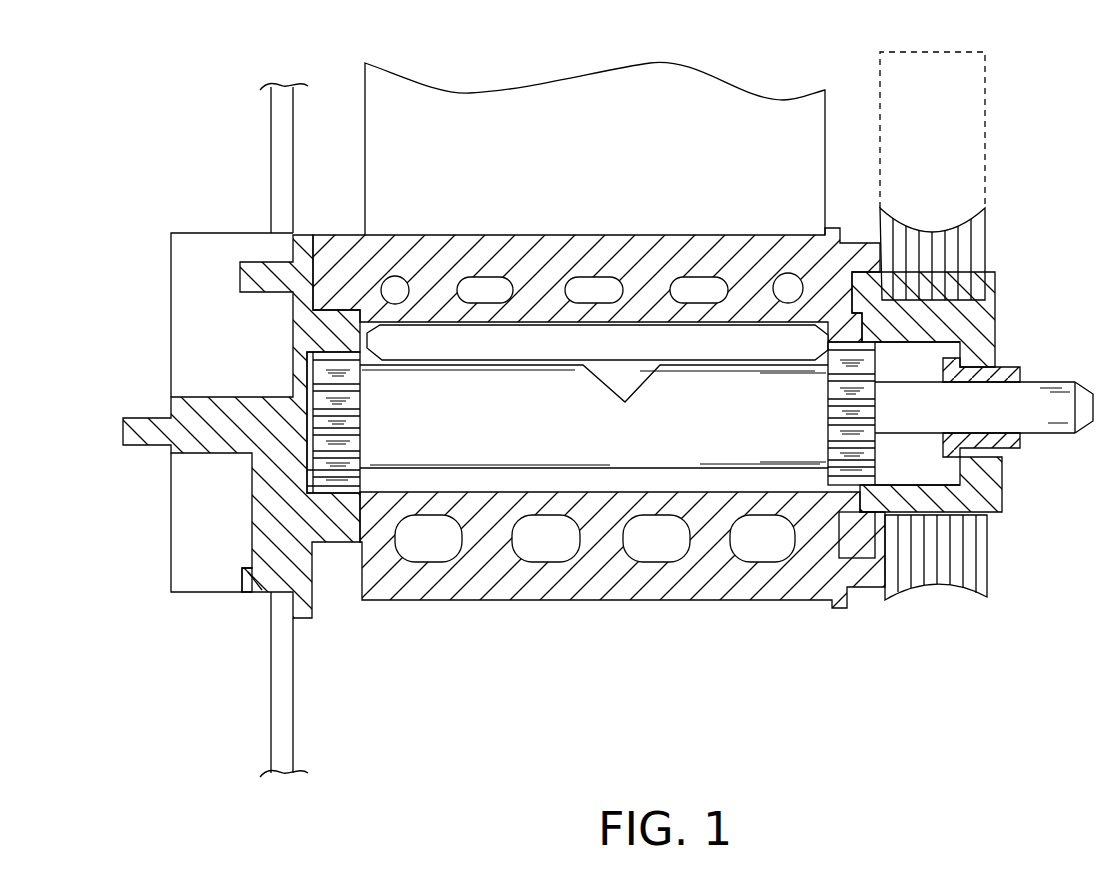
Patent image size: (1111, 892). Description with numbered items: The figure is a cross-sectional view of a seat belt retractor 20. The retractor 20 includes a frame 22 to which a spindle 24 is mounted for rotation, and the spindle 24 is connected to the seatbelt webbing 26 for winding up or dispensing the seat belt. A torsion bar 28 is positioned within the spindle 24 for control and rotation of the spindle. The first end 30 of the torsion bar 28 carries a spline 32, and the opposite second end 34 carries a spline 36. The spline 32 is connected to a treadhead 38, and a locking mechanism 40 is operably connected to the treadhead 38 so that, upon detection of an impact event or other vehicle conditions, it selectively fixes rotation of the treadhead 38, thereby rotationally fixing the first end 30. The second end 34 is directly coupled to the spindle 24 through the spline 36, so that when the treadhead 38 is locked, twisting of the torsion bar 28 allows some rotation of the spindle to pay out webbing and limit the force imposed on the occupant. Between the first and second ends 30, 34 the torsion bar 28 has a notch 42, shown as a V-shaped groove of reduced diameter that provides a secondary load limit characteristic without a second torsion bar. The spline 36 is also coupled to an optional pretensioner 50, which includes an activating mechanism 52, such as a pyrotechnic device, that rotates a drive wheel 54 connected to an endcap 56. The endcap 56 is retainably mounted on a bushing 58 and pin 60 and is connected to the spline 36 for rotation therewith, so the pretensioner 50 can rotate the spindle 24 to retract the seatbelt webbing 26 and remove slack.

The seat belt retractor 20 is at (236, 80).
The frame 22 is at (278, 175).
The spindle 24 is at (522, 257).
The seatbelt webbing 26 is at (647, 155).
The torsion bar 28 is at (628, 440).
The first end 30 is at (370, 435).
The spline 32 is at (343, 467).
The second end 34 is at (808, 415).
The spline 36 is at (865, 433).
The treadhead 38 is at (267, 580).
The locking mechanism 40 is at (185, 333).
The notch 42 is at (612, 378).
The pretensioner 50 is at (997, 210).
The activating mechanism 52 is at (958, 121).
The drive wheel 54 is at (977, 271).
The endcap 56 is at (990, 347).
The bushing 58 is at (1012, 450).
The pin 60 is at (925, 420).